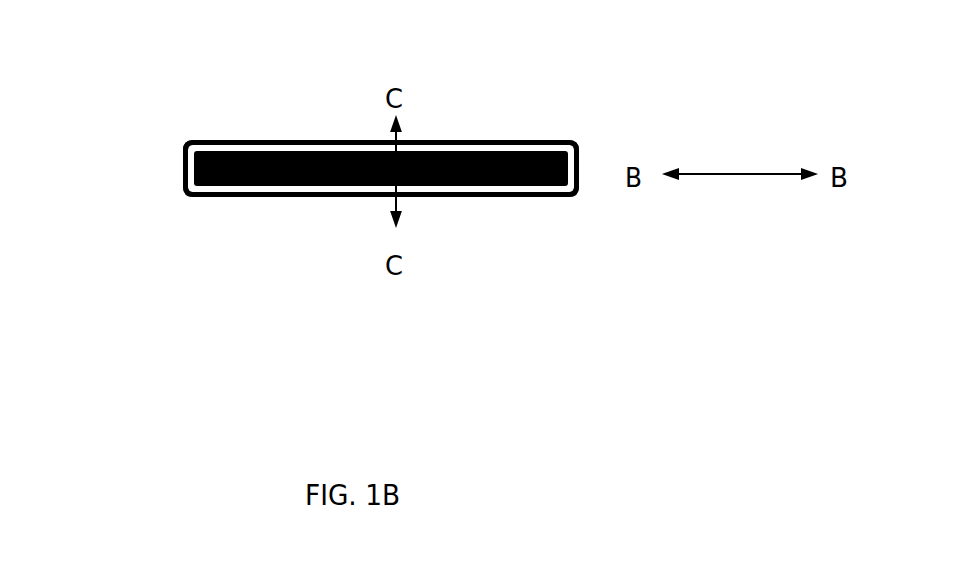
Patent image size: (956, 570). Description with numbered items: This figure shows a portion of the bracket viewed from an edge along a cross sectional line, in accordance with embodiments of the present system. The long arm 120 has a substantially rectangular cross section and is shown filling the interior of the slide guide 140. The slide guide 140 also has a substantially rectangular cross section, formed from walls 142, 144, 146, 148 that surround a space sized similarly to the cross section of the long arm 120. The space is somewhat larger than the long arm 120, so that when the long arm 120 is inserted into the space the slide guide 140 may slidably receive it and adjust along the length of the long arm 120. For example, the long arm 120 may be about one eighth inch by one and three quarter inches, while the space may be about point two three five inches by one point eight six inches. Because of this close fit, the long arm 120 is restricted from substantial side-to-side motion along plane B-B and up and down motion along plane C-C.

The long arm 120 is at (228, 148).
The slide guide 140 is at (474, 128).
The wall 142 is at (525, 205).
The wall 144 is at (598, 145).
The wall 146 is at (346, 125).
The wall 148 is at (166, 168).